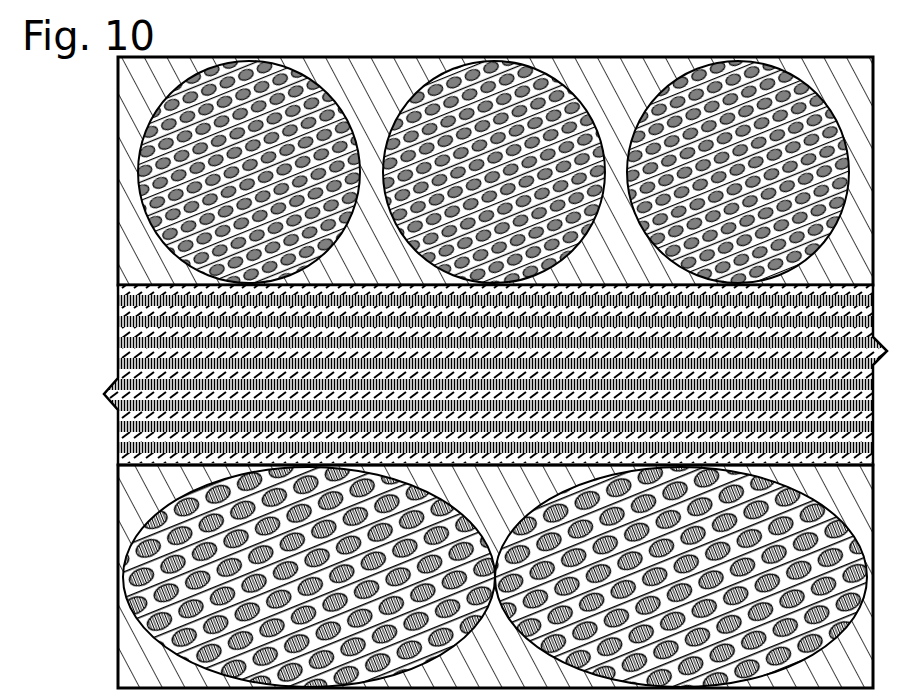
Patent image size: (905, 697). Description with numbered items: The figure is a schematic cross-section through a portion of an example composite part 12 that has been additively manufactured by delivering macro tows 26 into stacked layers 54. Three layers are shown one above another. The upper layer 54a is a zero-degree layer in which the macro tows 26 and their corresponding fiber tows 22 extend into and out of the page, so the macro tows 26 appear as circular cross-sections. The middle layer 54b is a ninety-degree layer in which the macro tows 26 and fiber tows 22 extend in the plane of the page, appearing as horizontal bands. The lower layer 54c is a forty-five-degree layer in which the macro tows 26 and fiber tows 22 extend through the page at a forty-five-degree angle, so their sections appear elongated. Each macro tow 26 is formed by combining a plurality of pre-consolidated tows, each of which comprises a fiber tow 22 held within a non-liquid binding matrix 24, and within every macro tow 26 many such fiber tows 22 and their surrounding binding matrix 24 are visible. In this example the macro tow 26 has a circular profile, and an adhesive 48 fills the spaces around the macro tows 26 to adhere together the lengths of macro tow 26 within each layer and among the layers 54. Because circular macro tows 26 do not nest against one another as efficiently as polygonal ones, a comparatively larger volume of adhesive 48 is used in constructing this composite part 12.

The composite part 12 is at (62, 115).
The layers 54 is at (51, 168).
The upper layer 54a is at (107, 180).
The middle layer 54b is at (453, 338).
The lower layer 54c is at (107, 580).
The fiber tow 22 is at (118, 336).
The non-liquid binding matrix 24 is at (118, 458).
The macro tow 26 is at (313, 77).
The adhesive 48 is at (634, 80).